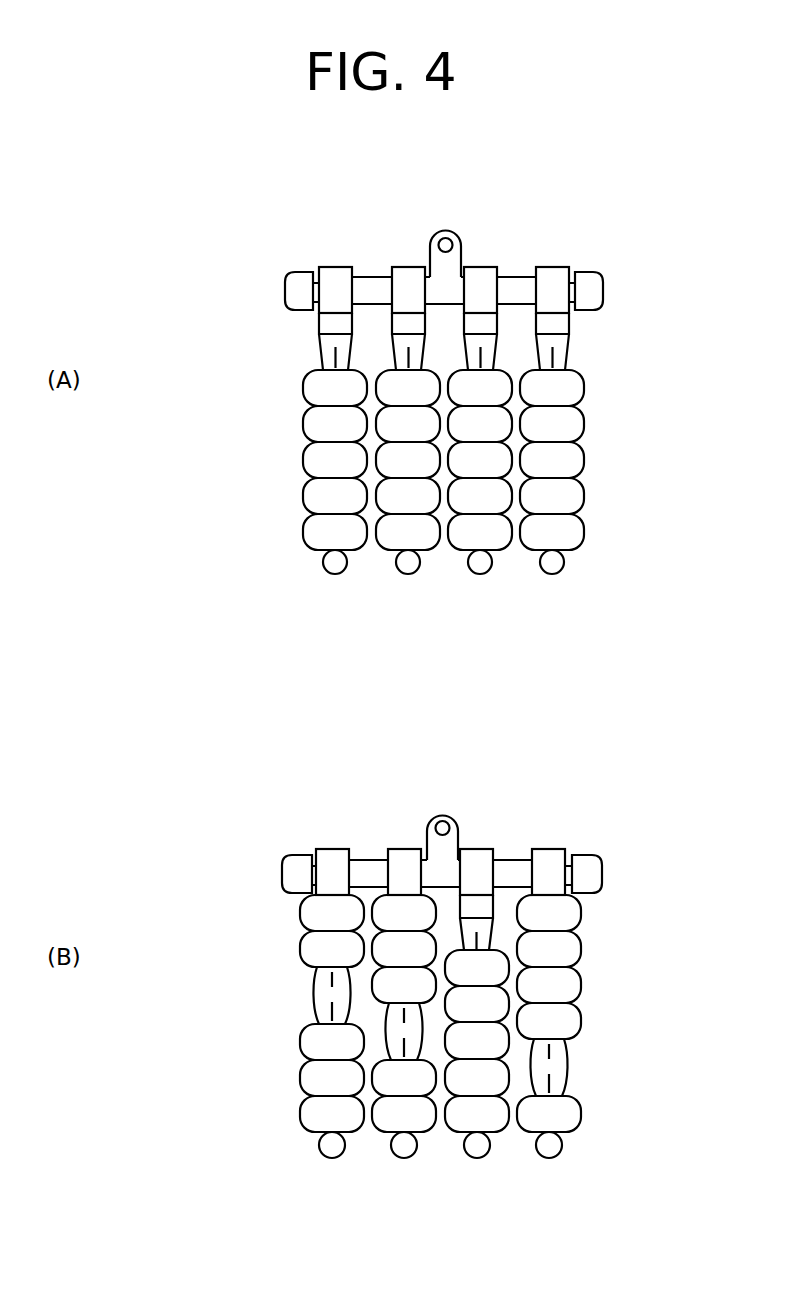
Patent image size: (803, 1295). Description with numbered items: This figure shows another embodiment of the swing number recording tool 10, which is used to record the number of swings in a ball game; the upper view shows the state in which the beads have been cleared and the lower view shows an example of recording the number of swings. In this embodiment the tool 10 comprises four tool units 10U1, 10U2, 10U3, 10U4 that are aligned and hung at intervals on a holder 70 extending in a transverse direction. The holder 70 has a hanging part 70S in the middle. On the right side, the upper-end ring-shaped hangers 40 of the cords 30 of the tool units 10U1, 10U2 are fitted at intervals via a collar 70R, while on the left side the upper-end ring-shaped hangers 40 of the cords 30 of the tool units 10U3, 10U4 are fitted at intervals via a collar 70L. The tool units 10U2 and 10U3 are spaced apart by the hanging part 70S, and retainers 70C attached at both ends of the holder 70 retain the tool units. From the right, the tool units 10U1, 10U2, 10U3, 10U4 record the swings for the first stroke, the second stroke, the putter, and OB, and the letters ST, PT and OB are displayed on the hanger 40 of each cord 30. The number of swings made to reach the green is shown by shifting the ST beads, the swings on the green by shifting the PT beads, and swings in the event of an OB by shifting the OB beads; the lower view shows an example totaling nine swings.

The swing number recording tool 10 is at (609, 196).
The tool unit 10U1 is at (590, 386).
The tool unit 10U2 is at (514, 410).
The tool unit 10U3 is at (397, 344).
The tool unit 10U4 is at (316, 323).
The cord 30 is at (317, 358).
The ring-shaped hanger 40 is at (335, 267).
The holder 70 is at (444, 297).
The collar 70L is at (375, 277).
The collar 70R is at (522, 277).
The retainer 70C is at (297, 288).
The hanging part 70S is at (445, 229).